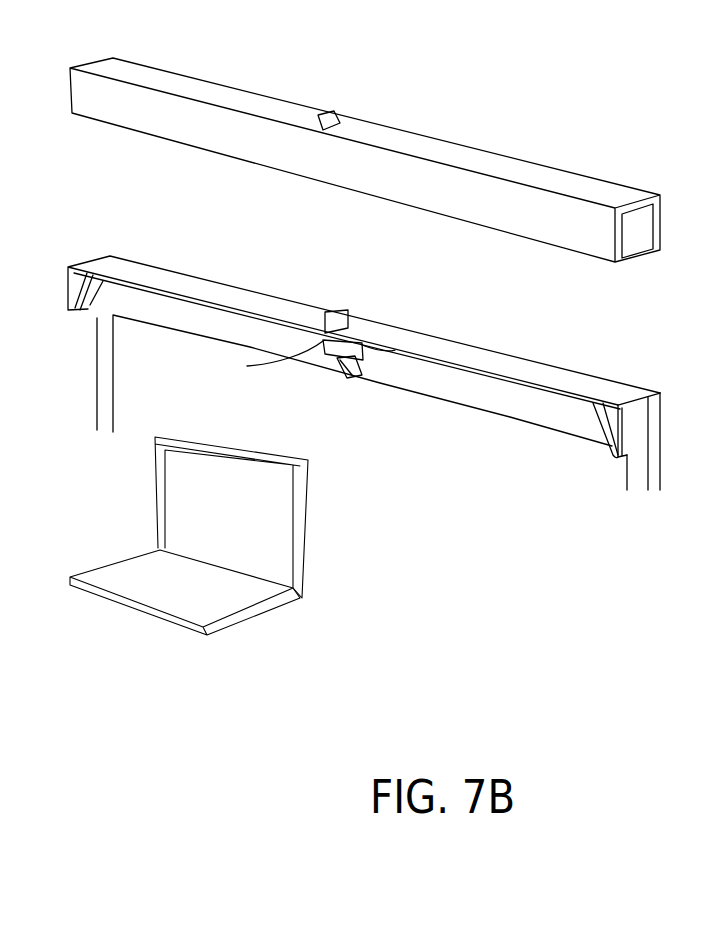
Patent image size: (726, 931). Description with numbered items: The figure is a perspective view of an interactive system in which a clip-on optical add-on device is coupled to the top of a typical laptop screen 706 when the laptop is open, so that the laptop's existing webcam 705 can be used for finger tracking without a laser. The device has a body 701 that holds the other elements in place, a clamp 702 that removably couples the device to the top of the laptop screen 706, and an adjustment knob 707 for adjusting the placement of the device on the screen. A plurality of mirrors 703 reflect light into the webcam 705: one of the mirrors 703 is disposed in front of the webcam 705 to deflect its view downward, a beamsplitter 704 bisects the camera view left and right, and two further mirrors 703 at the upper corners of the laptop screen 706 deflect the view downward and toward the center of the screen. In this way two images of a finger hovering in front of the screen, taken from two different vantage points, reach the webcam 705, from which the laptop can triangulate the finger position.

The body 701 is at (562, 178).
The clamp 702 is at (652, 228).
The mirrors 703 is at (88, 307).
The beamsplitter 704 is at (347, 380).
The webcam 705 is at (362, 347).
The laptop screen 706 is at (562, 412).
The adjustment knob 707 is at (331, 123).